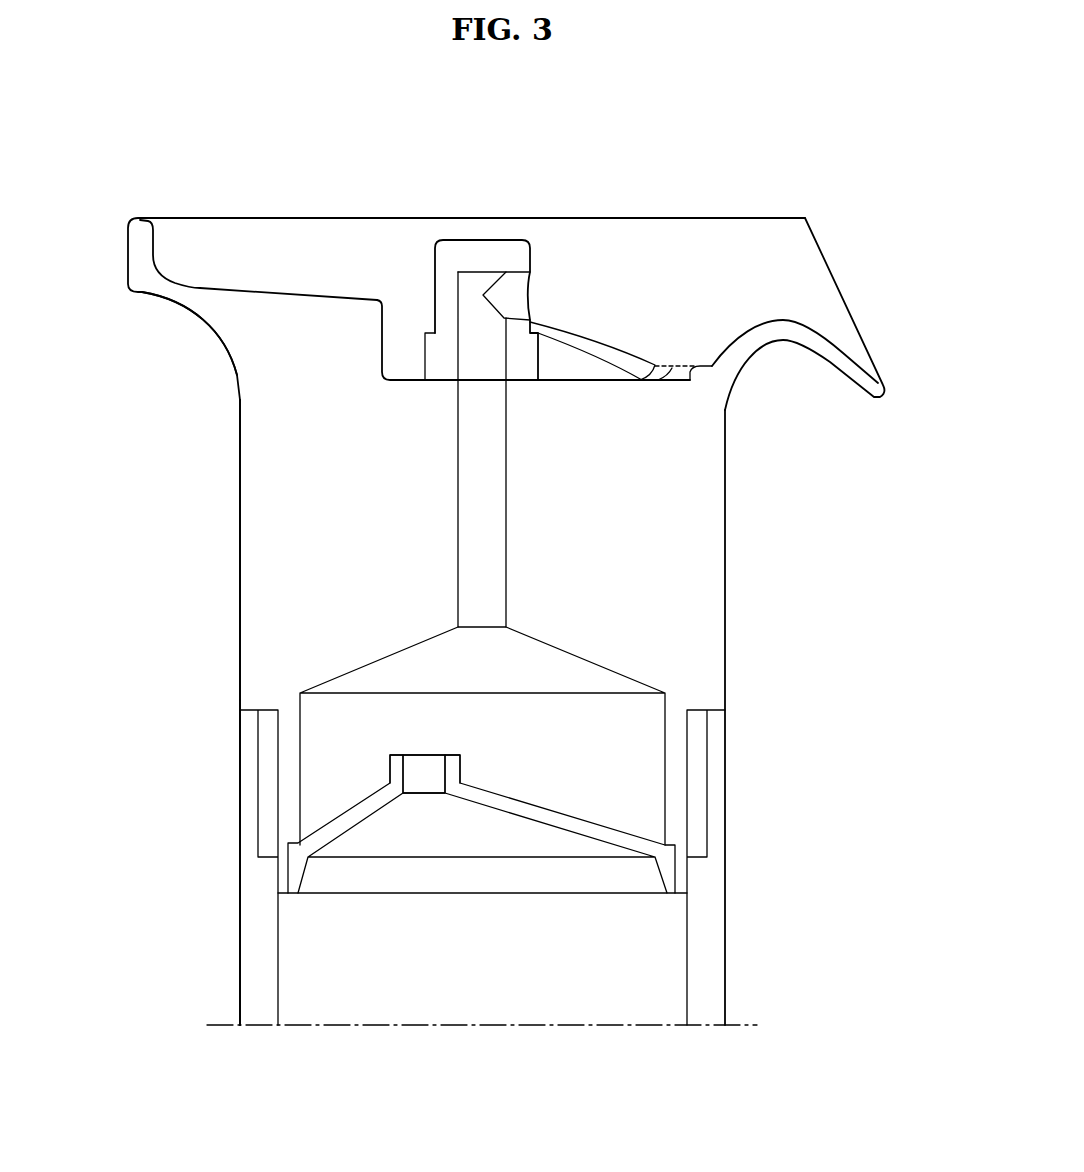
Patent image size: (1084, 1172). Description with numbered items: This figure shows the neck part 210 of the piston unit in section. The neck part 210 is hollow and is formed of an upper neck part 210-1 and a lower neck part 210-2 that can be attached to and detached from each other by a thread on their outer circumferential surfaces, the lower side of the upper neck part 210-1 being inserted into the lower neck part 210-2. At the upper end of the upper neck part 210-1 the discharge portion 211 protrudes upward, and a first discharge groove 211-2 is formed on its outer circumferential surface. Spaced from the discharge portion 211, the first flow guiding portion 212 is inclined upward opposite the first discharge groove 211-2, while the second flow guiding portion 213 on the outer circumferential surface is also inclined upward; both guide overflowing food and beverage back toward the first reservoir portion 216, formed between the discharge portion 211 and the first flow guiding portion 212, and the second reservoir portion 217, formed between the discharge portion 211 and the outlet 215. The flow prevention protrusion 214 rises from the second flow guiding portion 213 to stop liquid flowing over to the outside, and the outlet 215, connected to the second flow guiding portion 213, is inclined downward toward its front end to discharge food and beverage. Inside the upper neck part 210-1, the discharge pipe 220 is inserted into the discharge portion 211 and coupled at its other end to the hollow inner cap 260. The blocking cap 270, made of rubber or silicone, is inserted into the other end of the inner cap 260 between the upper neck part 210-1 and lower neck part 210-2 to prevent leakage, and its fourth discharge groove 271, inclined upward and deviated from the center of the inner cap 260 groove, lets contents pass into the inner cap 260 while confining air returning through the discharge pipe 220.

The neck part 210 is at (97, 533).
The upper neck part 210-1 is at (240, 545).
The lower neck part 210-2 is at (240, 893).
The discharge portion 211 is at (480, 240).
The first discharge groove 211-2 is at (530, 297).
The first flow guiding portion 212 is at (378, 342).
The second flow guiding portion 213 is at (232, 335).
The flow prevention protrusion 214 is at (137, 248).
The outlet 215 is at (843, 357).
The first reservoir portion 216 is at (403, 340).
The second reservoir portion 217 is at (645, 373).
The discharge pipe 220 is at (490, 480).
The inner cap 260 is at (573, 670).
The blocking cap 270 is at (630, 873).
The fourth discharge groove 271 is at (425, 765).